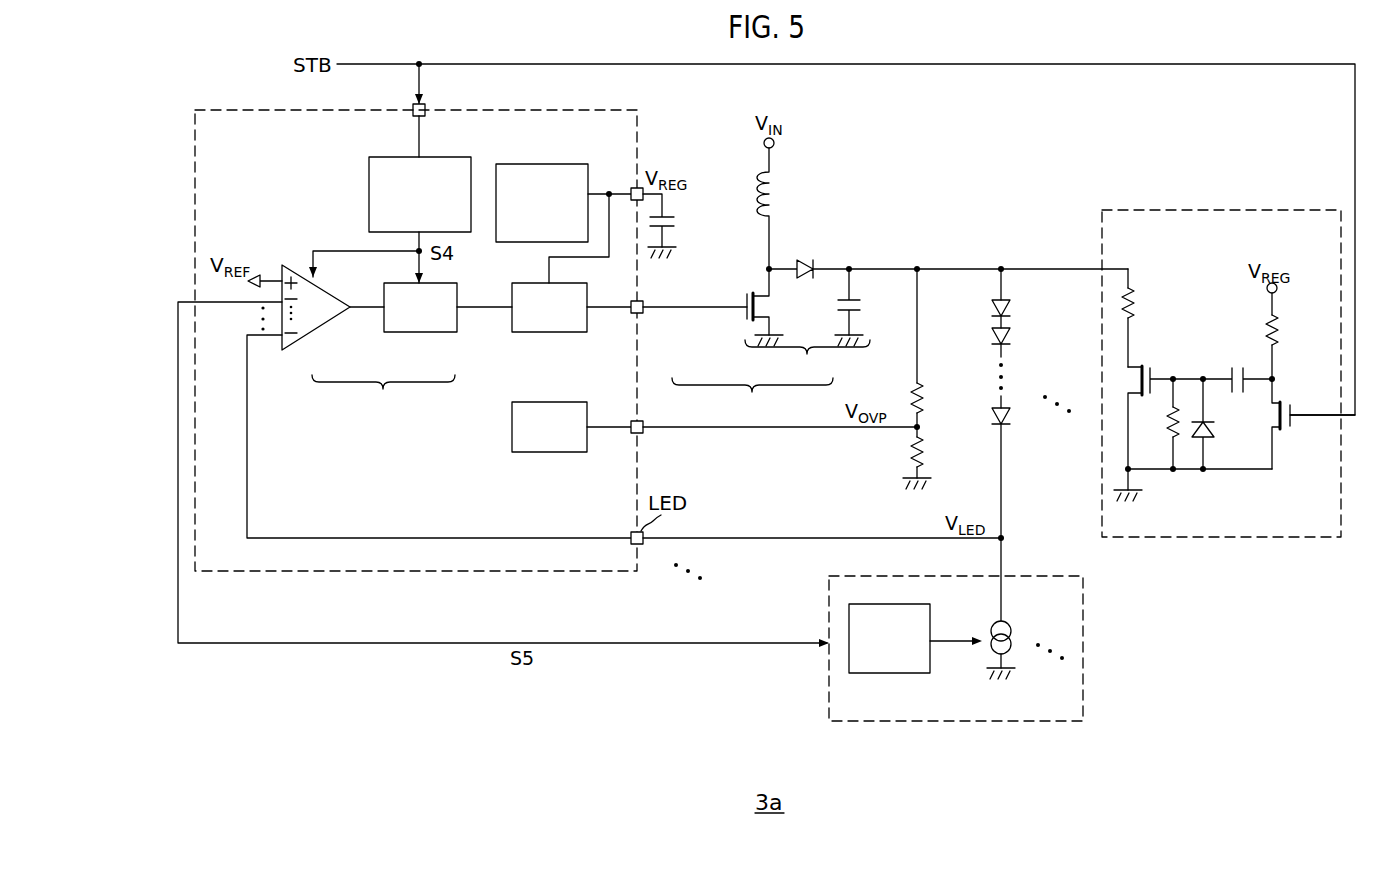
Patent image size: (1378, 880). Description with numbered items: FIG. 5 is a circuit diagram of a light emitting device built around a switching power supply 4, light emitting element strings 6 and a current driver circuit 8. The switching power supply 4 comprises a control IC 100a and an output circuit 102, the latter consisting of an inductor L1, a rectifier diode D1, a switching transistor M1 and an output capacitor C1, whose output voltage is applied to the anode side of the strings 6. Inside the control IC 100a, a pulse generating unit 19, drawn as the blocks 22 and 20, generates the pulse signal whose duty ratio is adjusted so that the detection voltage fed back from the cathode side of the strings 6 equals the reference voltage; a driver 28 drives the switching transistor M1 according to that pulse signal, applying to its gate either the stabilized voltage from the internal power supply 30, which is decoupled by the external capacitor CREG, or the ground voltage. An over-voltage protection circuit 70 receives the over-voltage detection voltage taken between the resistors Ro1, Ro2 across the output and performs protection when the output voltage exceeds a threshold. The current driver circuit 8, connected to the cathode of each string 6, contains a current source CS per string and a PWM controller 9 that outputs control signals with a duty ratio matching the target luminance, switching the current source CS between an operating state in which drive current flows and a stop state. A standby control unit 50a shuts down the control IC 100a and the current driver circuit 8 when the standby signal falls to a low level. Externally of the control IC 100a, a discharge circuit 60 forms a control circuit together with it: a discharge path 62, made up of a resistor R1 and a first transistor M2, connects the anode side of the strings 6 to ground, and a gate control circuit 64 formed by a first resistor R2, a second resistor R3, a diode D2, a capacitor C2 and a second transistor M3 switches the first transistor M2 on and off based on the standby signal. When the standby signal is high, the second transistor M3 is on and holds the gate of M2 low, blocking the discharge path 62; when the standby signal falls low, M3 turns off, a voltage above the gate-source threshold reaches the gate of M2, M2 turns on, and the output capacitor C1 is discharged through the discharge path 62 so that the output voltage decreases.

The control IC 100a is at (637, 363).
The standby control unit 50a is at (451, 157).
The internal power supply 30 is at (548, 164).
The error amplifier 22 is at (331, 322).
The PWM circuit 20 is at (424, 332).
The pulse generating unit 19 is at (383, 396).
The driver 28 is at (553, 332).
The over-voltage protection (OVP) circuit 70 is at (553, 452).
The output circuit 102 is at (807, 363).
The switching power supply 4 is at (752, 400).
The LED string 6 is at (1018, 295).
The current driver circuit 8 is at (956, 654).
The PWM controller 9 is at (887, 673).
The discharge circuit 60 is at (1197, 210).
The discharge path 62 is at (1177, 369).
The gate control circuit 64 is at (1209, 452).
The inductor L1 is at (780, 187).
The rectifier diode D1 is at (808, 257).
The switching transistor M1 is at (775, 305).
The output capacitor C1 is at (865, 307).
The capacitor CREG is at (683, 222).
The first resistor Ro1 is at (925, 400).
The second resistor Ro2 is at (925, 452).
The resistor R1 is at (1140, 305).
The first resistor R2 is at (1166, 425).
The second resistor R3 is at (1285, 328).
The first transistor M2 is at (1160, 403).
The second transistor M3 is at (1290, 432).
The capacitor C2 is at (1236, 395).
The diode D2 is at (1213, 428).
The current source CS is at (1013, 631).